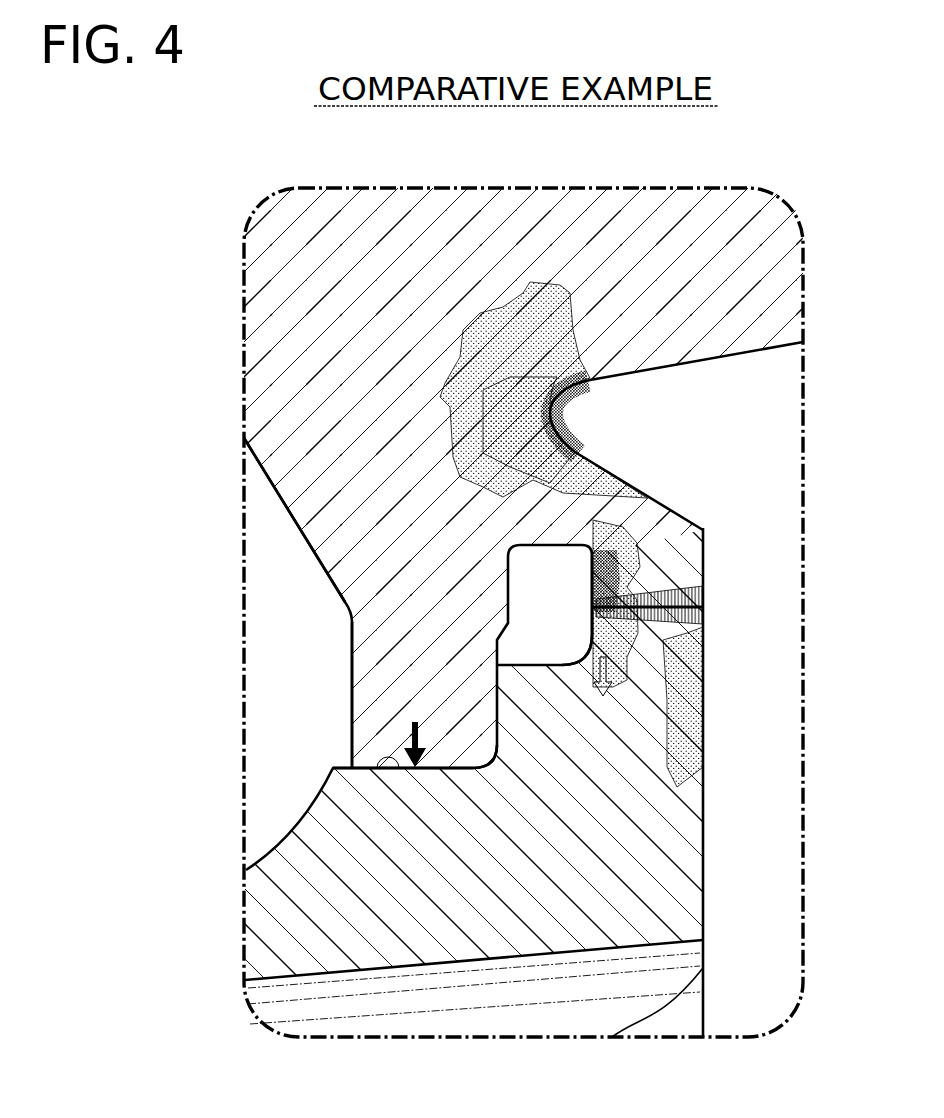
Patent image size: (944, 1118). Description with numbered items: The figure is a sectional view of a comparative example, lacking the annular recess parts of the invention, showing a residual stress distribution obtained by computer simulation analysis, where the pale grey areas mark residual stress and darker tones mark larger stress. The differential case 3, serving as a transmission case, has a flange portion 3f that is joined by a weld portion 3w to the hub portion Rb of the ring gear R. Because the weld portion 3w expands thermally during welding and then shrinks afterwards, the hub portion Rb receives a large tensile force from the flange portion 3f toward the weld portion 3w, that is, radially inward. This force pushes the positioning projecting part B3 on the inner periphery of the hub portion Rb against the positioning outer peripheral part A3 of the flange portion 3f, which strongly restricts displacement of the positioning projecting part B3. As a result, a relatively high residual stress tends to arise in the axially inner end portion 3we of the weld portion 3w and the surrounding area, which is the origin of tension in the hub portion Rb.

The hub portion Rb is at (422, 476).
The differential case 3 is at (298, 812).
The positioning projecting part B3 is at (368, 673).
The ring gear R is at (305, 541).
The positioning outer peripheral part A3 is at (379, 769).
The flange portion 3f is at (517, 862).
The weld portion 3w is at (707, 597).
The axially inner end portion 3we is at (592, 608).